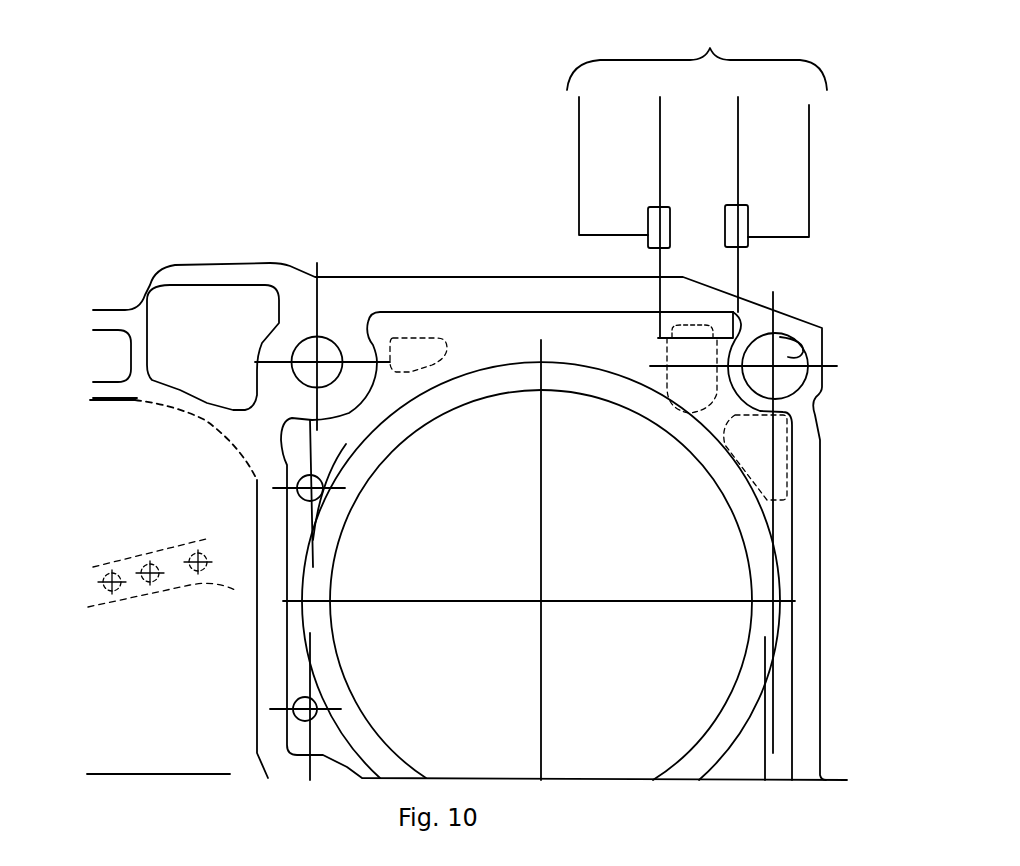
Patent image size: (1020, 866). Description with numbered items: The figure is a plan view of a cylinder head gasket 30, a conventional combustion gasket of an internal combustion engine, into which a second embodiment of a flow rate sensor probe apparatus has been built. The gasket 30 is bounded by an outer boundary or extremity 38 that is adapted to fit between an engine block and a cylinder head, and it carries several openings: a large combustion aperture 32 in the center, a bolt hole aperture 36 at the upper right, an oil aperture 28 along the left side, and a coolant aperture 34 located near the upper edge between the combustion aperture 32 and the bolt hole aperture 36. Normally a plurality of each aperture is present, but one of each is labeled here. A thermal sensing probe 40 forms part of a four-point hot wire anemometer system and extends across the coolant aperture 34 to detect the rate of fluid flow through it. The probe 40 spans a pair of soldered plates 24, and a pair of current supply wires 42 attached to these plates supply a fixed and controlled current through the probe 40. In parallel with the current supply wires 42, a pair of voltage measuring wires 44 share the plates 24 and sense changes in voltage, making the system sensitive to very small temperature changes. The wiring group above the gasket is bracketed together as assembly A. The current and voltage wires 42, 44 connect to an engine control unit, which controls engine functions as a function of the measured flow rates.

The soldered plates 24 is at (648, 223).
The oil aperture 28 is at (318, 597).
The cylinder head gasket 30 is at (410, 240).
The combustion aperture 32 is at (633, 413).
The coolant aperture 34 is at (685, 387).
The bolt hole aperture 36 is at (780, 335).
The boundary or extremity 38 is at (345, 275).
The thermal sensing probe 40 is at (700, 338).
The current supply wires 42 is at (832, 173).
The voltage measuring wires 44 is at (758, 145).
The sensor assembly A is at (697, 55).